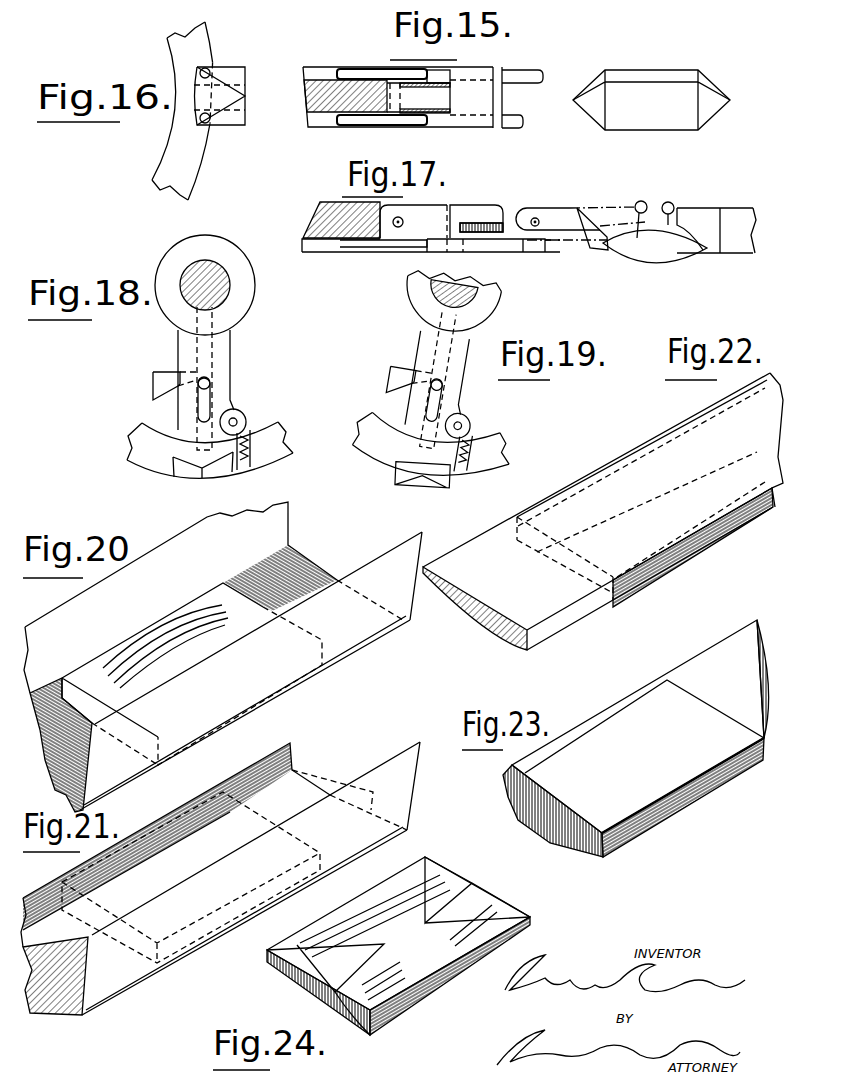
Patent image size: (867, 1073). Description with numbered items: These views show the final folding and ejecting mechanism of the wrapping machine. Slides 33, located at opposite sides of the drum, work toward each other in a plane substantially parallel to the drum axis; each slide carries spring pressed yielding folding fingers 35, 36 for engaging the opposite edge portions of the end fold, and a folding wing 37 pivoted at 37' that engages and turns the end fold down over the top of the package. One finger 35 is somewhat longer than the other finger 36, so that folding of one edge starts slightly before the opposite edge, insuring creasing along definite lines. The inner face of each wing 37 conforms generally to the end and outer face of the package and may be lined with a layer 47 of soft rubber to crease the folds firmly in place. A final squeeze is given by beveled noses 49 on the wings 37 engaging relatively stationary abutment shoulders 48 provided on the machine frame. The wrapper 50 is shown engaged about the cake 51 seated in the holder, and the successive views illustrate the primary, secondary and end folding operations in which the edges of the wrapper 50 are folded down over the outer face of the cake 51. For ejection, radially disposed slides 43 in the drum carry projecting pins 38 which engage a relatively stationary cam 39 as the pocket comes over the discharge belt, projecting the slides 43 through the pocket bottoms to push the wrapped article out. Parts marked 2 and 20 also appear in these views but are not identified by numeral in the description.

In FIG. 16, the annular ring member 2 is at (200, 39).
In FIG. 18, the annular ring member 2 is at (138, 446).
In FIG. 19, the annular ring member 2 is at (363, 428).
In FIG. 18, the roller and spring 20 is at (250, 465).
In FIG. 19, the roller and spring 20 is at (480, 441).
In FIG. 15, the slides 33 is at (309, 78).
In FIG. 17, the slides 33 is at (320, 210).
In FIG. 16, the yielding folding finger 35 is at (209, 65).
In FIG. 15, the yielding folding finger 35 is at (528, 73).
In FIG. 17, the yielding folding finger 35 is at (533, 252).
In FIG. 16, the yielding folding finger 36 is at (212, 135).
In FIG. 15, the yielding folding finger 36 is at (517, 132).
In FIG. 17, the yielding folding finger 36 is at (510, 252).
In FIG. 16, the folding wing 37 is at (236, 94).
In FIG. 15, the folding wing 37 is at (461, 117).
In FIG. 17, the folding wing 37 is at (547, 206).
In FIG. 17, the pivot 37' is at (411, 243).
In FIG. 18, the projecting pins 38 is at (210, 383).
In FIG. 19, the projecting pins 38 is at (445, 388).
In FIG. 18, the cam 39 is at (153, 375).
In FIG. 19, the cam 39 is at (405, 376).
In FIG. 18, the radially disposed slides 43 is at (197, 442).
In FIG. 19, the radially disposed slides 43 is at (420, 441).
In FIG. 17, the layer of soft rubber 47 is at (703, 258).
In FIG. 17, the abutment shoulders 48 is at (670, 202).
In FIG. 17, the beveled noses 49 is at (636, 203).
In FIG. 20, the wrapper 50 is at (223, 657).
In FIG. 21, the wrapper 50 is at (313, 768).
In FIG. 22, the wrapper 50 is at (543, 612).
In FIG. 23, the wrapper 50 is at (636, 738).
In FIG. 24, the wrapper 50 is at (398, 946).
In FIG. 20, the cake 51 is at (192, 674).
In FIG. 21, the cake 51 is at (173, 960).
In FIG. 22, the cake 51 is at (537, 552).